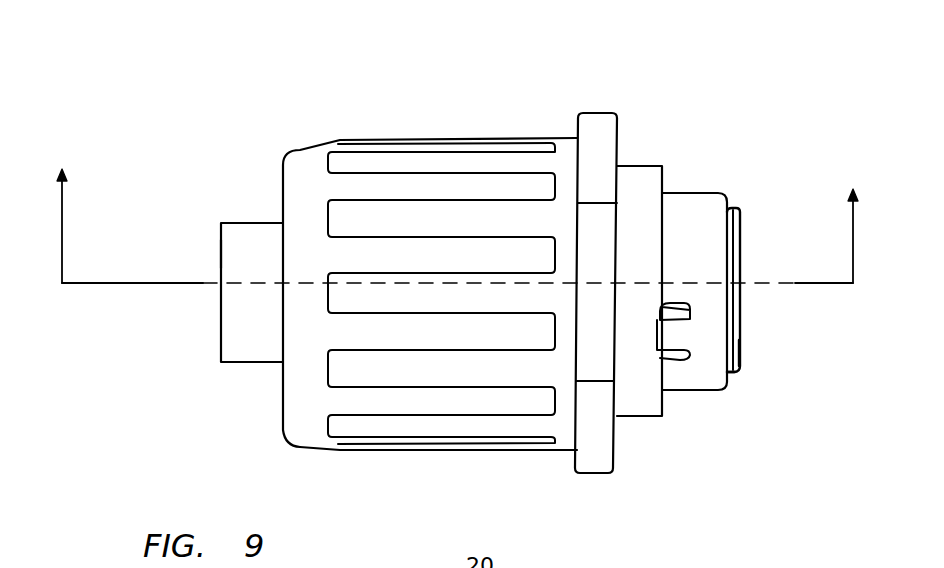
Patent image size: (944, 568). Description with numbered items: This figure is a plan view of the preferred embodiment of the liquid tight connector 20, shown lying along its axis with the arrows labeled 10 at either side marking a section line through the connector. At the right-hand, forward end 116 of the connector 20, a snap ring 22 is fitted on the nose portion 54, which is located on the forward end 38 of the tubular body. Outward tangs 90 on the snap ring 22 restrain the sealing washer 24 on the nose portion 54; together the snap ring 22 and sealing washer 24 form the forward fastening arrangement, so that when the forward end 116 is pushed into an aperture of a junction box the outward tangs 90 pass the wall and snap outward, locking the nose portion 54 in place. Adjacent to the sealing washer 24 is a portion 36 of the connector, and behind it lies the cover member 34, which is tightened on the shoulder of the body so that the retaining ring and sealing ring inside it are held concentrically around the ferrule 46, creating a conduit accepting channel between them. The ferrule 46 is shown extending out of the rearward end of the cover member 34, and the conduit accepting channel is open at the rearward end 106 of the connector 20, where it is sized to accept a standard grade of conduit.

The liquid tight connector 20 is at (467, 104).
The section line 10 is at (454, 205).
The rearward end 106 is at (221, 255).
The ferrule 46 is at (268, 259).
The cover member 34 is at (450, 266).
The flange 36 is at (612, 178).
The sealing washer 24 is at (666, 224).
The snap ring 22 is at (716, 249).
The forward end 38 is at (740, 255).
The outward tangs 90 is at (668, 335).
The forward end 116 is at (740, 345).
The nose portion 54 is at (735, 372).